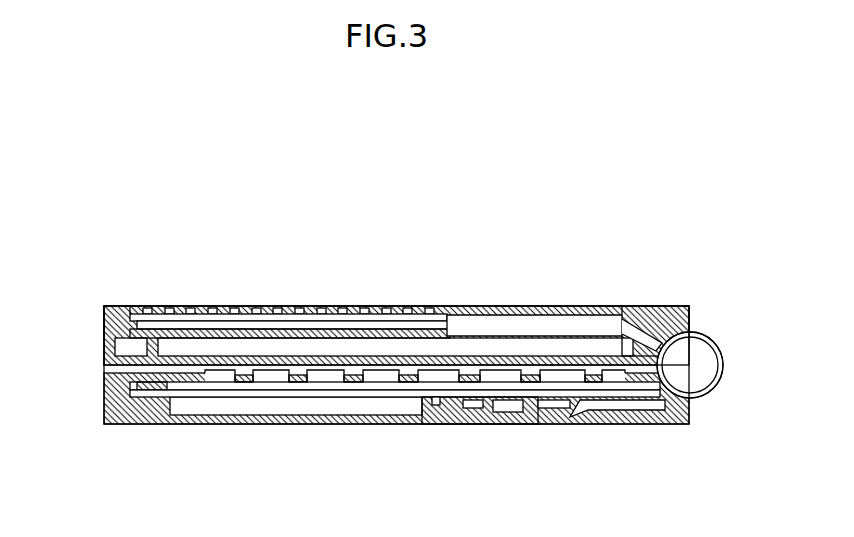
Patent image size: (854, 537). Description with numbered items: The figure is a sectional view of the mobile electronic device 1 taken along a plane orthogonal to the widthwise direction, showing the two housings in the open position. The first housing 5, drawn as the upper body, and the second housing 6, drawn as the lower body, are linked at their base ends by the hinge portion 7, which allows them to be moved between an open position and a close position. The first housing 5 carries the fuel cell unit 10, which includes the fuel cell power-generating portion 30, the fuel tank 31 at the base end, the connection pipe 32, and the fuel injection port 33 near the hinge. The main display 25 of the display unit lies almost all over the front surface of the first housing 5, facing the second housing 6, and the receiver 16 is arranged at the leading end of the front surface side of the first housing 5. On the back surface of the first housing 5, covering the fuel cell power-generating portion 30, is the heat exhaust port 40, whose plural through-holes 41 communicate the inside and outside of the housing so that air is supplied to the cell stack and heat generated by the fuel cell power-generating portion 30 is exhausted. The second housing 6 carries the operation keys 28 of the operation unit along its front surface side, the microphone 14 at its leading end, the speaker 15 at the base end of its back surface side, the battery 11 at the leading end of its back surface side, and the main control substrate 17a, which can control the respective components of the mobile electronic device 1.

The mobile electronic device 1 is at (318, 151).
The first housing 5 is at (104, 336).
The second housing 6 is at (104, 400).
The hinge portion 7 is at (715, 408).
The fuel cell unit 10 is at (164, 308).
The battery 11 is at (300, 394).
The microphone 14 is at (150, 384).
The speaker 15 is at (630, 404).
The receiver 16 is at (115, 306).
The main control substrate 17a is at (431, 404).
The main display 25 is at (184, 334).
The operation keys 28 is at (505, 374).
The fuel cell power-generating portion 30 is at (437, 318).
The fuel tank 31 is at (573, 328).
The connection pipe 32 is at (641, 306).
The fuel injection port 33 is at (703, 334).
The heat exhaust port 40 is at (337, 273).
The through-holes 41 is at (283, 306).